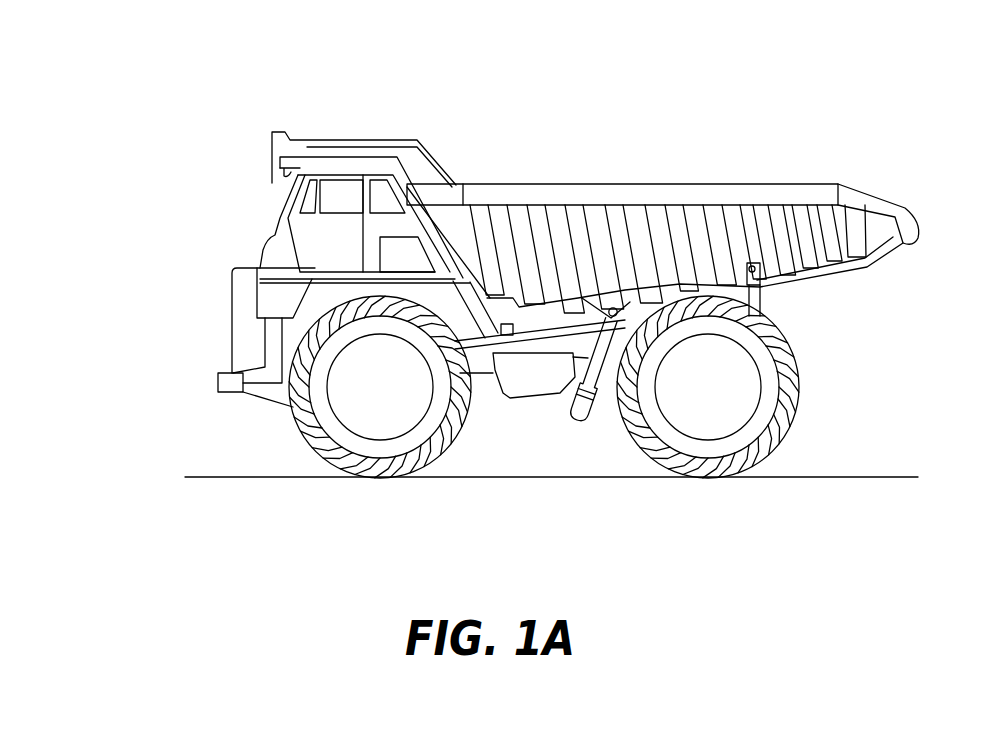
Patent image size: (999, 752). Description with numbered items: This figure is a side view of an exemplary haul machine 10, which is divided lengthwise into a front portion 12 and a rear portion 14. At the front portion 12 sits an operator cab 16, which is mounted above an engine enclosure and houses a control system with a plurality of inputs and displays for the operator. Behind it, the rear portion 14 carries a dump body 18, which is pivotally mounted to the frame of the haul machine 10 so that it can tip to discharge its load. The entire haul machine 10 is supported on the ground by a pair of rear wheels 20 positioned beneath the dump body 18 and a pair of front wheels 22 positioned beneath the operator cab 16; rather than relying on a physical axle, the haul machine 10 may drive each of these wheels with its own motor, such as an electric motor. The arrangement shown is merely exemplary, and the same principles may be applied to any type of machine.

The haul machine 10 is at (188, 141).
The front portion 12 is at (213, 347).
The rear portion 14 is at (894, 167).
The operator cab 16 is at (268, 256).
The dump body 18 is at (592, 183).
The rear wheels 20 is at (715, 399).
The front wheels 22 is at (387, 399).